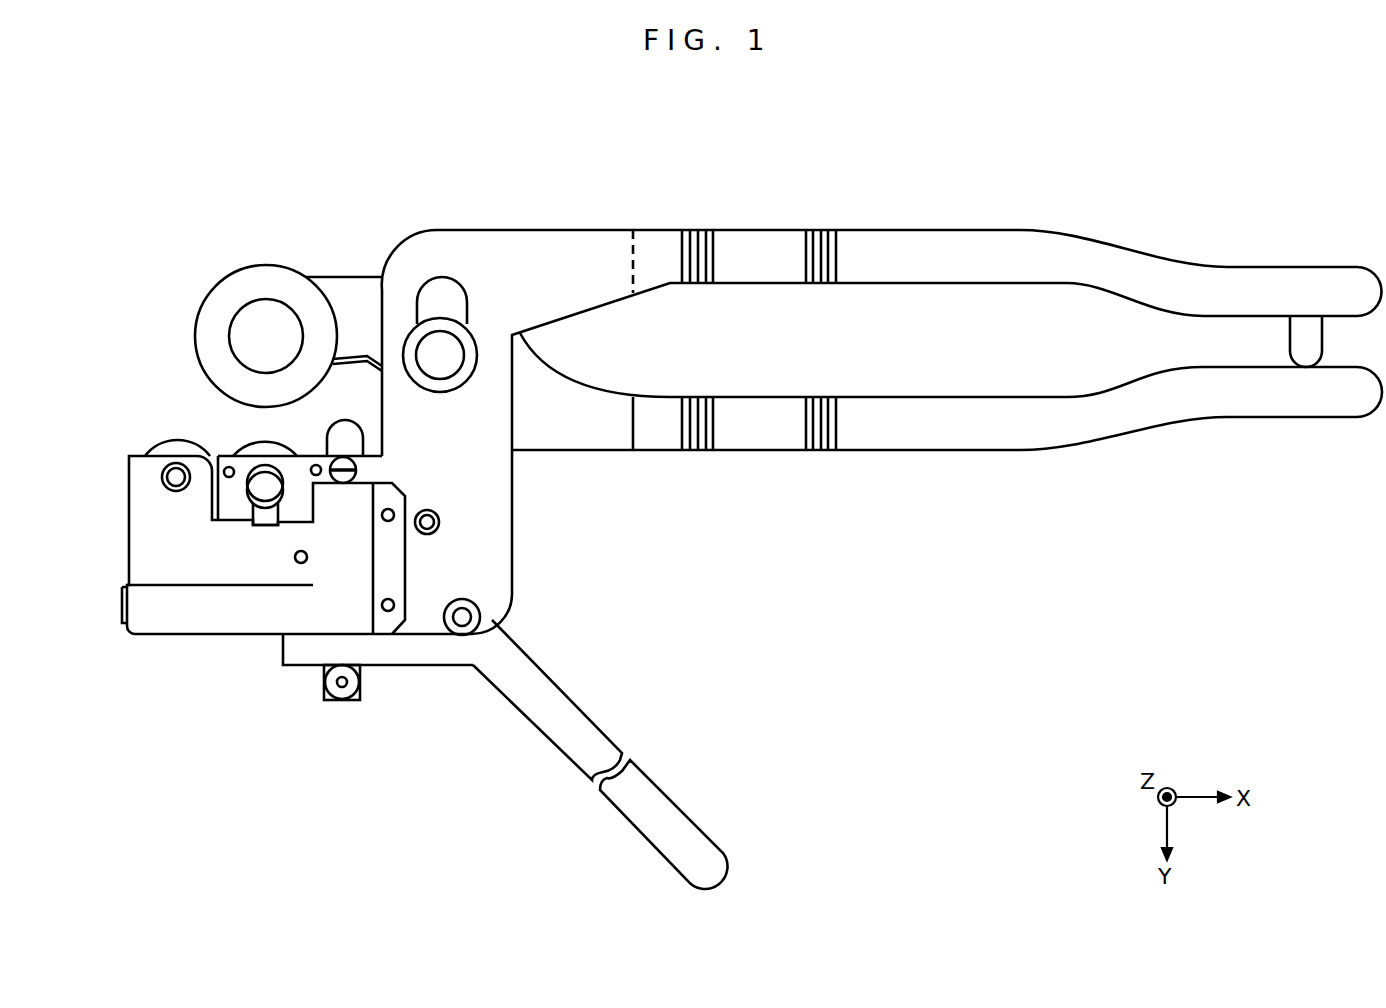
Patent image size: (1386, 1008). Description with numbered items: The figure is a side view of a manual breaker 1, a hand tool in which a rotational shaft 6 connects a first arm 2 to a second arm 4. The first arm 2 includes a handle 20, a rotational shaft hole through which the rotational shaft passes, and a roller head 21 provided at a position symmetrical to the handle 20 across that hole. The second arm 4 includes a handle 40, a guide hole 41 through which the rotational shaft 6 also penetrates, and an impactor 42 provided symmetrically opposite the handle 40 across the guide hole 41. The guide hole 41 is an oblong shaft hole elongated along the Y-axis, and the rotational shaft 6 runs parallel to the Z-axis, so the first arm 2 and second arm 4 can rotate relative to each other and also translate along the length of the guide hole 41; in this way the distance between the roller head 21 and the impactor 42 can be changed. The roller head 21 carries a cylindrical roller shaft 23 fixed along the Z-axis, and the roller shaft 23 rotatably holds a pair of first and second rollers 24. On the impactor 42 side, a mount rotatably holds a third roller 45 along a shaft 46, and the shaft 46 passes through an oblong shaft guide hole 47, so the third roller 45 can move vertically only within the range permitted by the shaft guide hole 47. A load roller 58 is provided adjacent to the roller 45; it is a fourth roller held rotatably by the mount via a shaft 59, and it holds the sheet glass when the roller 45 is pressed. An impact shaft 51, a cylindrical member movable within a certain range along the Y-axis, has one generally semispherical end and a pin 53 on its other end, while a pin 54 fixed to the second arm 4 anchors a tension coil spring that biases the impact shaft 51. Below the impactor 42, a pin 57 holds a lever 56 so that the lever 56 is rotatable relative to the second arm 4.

The manual breaker 1 is at (990, 618).
The first arm 2 is at (600, 437).
The second arm 4 is at (573, 260).
The rotational shaft 6 is at (443, 363).
The handle 20 is at (905, 438).
The roller head 21 is at (185, 260).
The roller shaft 23 is at (258, 300).
The first and second rollers 24 is at (195, 330).
The handle 40 is at (905, 243).
The guide hole 41 is at (462, 288).
The impactor 42 is at (242, 645).
The third roller 45 is at (250, 441).
The shaft 46 is at (250, 508).
The shaft guide hole 47 is at (250, 480).
The impact shaft 51 is at (343, 425).
The pin 53 is at (348, 682).
The pin 54 is at (357, 467).
The lever 56 is at (568, 718).
The pin 57 is at (480, 617).
The load roller 58 is at (175, 440).
The shaft 59 is at (160, 480).